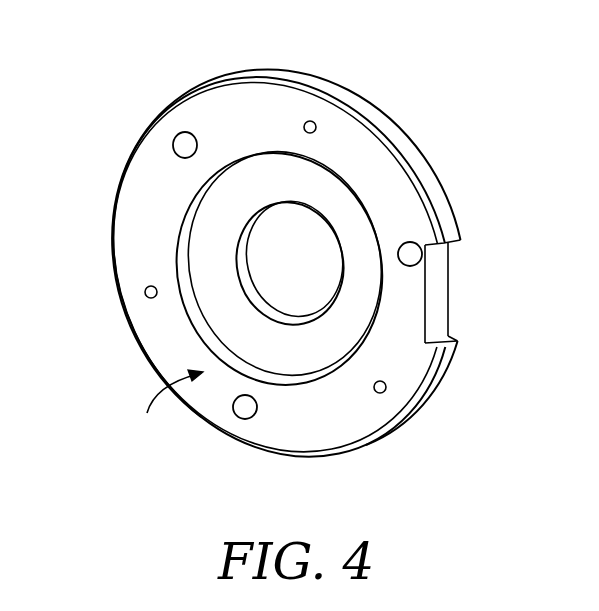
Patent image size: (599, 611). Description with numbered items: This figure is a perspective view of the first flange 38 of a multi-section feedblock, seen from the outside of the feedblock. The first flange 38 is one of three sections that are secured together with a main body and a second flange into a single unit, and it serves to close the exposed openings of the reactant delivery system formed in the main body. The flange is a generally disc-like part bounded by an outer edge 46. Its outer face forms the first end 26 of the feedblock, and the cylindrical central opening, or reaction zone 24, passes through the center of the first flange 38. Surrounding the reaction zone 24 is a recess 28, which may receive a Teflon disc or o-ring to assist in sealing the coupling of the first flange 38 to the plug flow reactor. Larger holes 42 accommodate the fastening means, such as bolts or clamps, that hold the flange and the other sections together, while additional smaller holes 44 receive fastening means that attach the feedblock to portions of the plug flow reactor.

The central opening 24 is at (312, 271).
The first end 26 is at (160, 347).
The recess 28 is at (213, 228).
The first flange 38 is at (161, 411).
The holes 42 is at (174, 143).
The holes 44 is at (310, 121).
The outer edge 46 is at (403, 137).